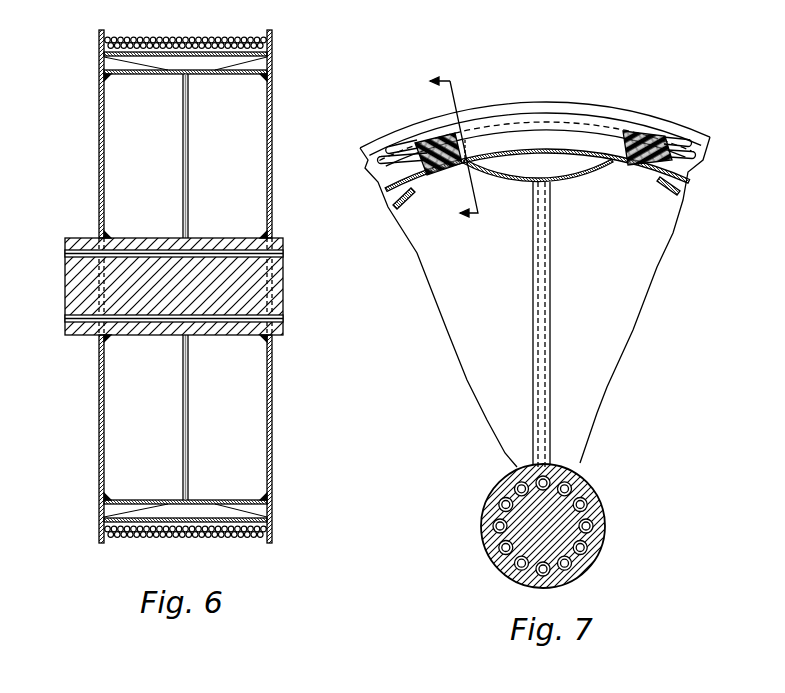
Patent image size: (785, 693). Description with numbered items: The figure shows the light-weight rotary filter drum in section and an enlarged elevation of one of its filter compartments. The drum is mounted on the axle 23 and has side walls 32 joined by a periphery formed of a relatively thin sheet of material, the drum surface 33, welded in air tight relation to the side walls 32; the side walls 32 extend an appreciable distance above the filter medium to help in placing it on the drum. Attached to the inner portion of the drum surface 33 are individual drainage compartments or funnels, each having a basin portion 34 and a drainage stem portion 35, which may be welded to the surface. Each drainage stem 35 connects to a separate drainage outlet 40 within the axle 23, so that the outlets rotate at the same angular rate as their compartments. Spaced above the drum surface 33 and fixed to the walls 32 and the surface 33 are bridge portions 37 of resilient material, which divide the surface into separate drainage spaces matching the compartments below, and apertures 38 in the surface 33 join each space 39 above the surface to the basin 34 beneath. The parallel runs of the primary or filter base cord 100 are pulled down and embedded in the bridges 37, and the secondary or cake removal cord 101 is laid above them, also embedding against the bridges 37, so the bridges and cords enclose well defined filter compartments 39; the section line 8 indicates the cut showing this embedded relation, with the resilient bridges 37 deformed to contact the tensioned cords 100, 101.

In FIG. 7, the section line 8- 8 is at (440, 155).
In FIG. 6, the axle 23 is at (73, 289).
In FIG. 7, the axle 23 is at (503, 490).
In FIG. 6, the side walls 32 is at (273, 186).
In FIG. 7, the side walls 32 is at (480, 113).
In FIG. 6, the drum surface 33 is at (220, 62).
In FIG. 7, the drum surface 33 is at (604, 165).
In FIG. 6, the basin portion 34 is at (171, 68).
In FIG. 7, the basin portion 34 is at (522, 183).
In FIG. 6, the drainage stem portion 35 is at (189, 178).
In FIG. 7, the drainage stem portion 35 is at (546, 312).
In FIG. 6, the bridge portions 37 is at (272, 47).
In FIG. 7, the bridge portions 37 is at (436, 172).
In FIG. 7, the apertures 38 is at (540, 153).
In FIG. 7, the filter compartment 39 is at (551, 148).
In FIG. 6, the drainage outlet 40 is at (64, 253).
In FIG. 7, the drainage outlet 40 is at (580, 474).
In FIG. 7, the primary or filter base cord 100 is at (607, 128).
In FIG. 7, the secondary or cake removal cord 101 is at (593, 118).